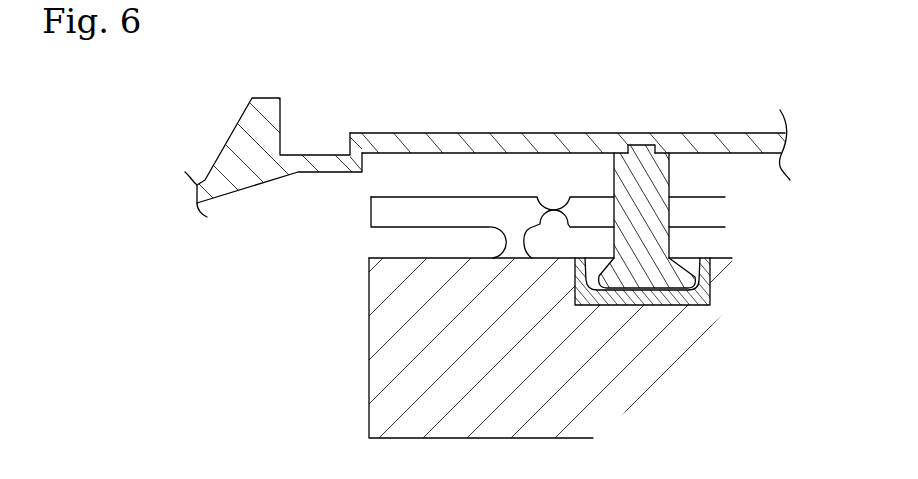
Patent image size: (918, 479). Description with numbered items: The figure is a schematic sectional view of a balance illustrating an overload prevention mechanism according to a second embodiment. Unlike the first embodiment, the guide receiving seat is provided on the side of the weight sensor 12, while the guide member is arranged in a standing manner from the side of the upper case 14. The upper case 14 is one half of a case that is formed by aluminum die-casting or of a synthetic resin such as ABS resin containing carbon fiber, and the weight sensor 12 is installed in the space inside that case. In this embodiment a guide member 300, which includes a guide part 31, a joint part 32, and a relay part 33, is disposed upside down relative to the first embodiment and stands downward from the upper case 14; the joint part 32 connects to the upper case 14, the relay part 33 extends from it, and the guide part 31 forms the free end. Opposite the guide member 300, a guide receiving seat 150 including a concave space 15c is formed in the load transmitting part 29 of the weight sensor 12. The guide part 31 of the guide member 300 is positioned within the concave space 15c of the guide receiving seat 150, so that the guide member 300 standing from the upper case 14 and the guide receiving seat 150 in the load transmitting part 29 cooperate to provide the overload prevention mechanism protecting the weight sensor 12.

The weight sensor 12 is at (369, 332).
The upper case 14 is at (243, 125).
The load transmitting part 29 is at (602, 367).
The guide part 31 is at (648, 282).
The joint part 32 is at (642, 145).
The relay part 33 is at (637, 183).
The guide receiving seat 150 is at (703, 293).
The concave space 15c is at (692, 262).
The guide member 300 is at (652, 173).